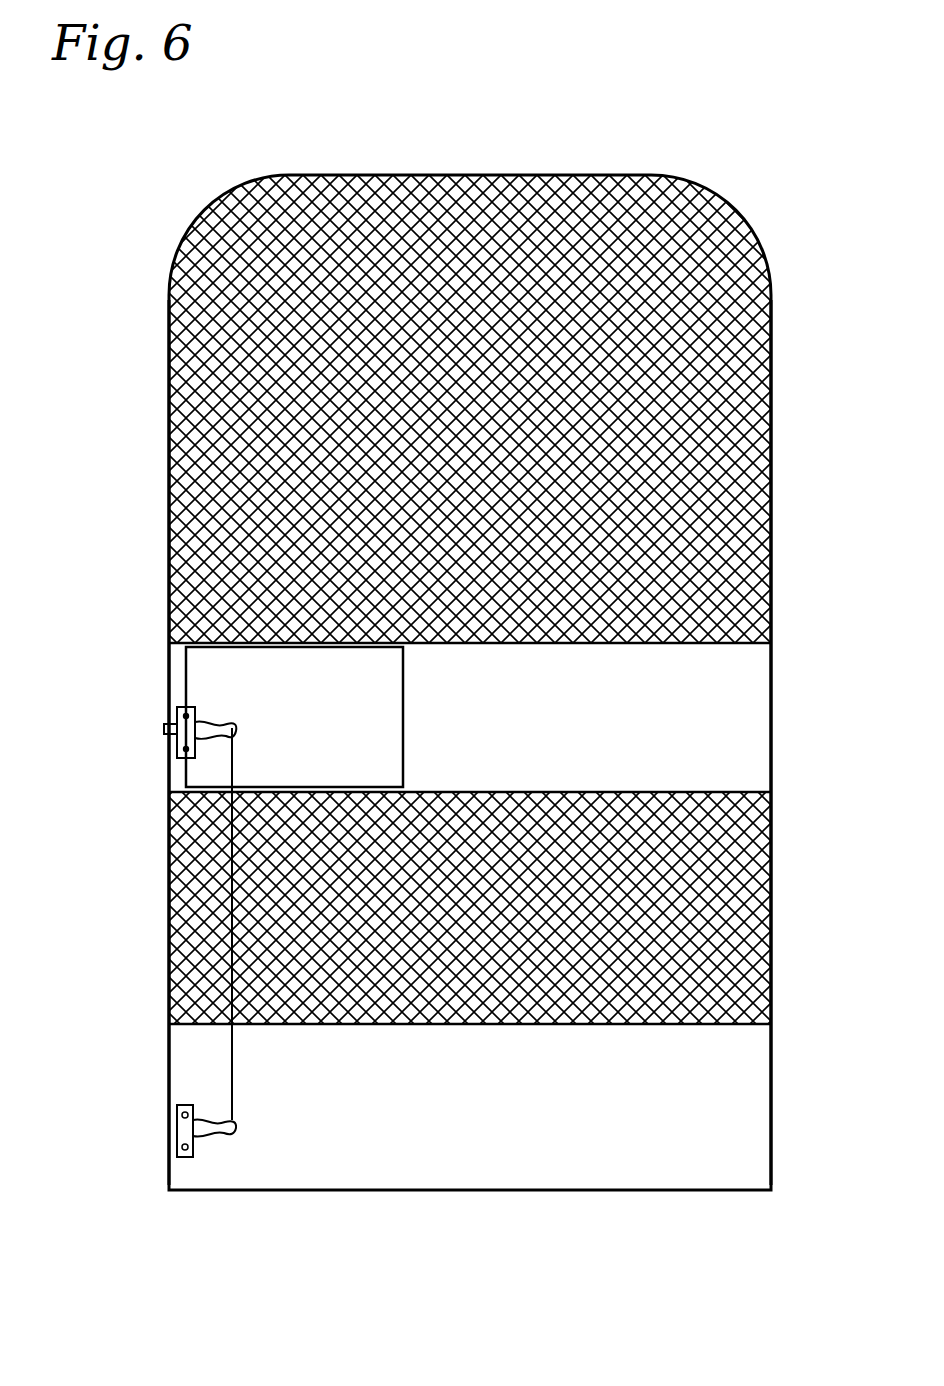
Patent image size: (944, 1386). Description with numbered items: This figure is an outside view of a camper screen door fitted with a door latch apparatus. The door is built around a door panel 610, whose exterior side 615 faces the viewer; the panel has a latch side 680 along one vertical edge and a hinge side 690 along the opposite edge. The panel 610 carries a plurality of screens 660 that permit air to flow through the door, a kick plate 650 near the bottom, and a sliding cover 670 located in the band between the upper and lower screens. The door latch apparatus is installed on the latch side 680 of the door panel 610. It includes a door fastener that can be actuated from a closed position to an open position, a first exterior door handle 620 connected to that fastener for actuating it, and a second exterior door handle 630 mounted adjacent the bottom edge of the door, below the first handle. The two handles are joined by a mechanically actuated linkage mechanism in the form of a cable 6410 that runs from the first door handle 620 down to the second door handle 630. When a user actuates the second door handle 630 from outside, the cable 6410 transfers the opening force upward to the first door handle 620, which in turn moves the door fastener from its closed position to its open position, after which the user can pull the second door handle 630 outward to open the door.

The exterior side 615 is at (320, 203).
The screens 660 is at (743, 293).
The latch side 680 is at (168, 410).
The hinge side 690 is at (770, 430).
The door panel 610 is at (738, 705).
The kick plate 650 is at (725, 1087).
The sliding cover 670 is at (197, 683).
The first exterior door handle 620 is at (177, 715).
The cable 6410 is at (232, 1058).
The second exterior door handle 630 is at (177, 1120).